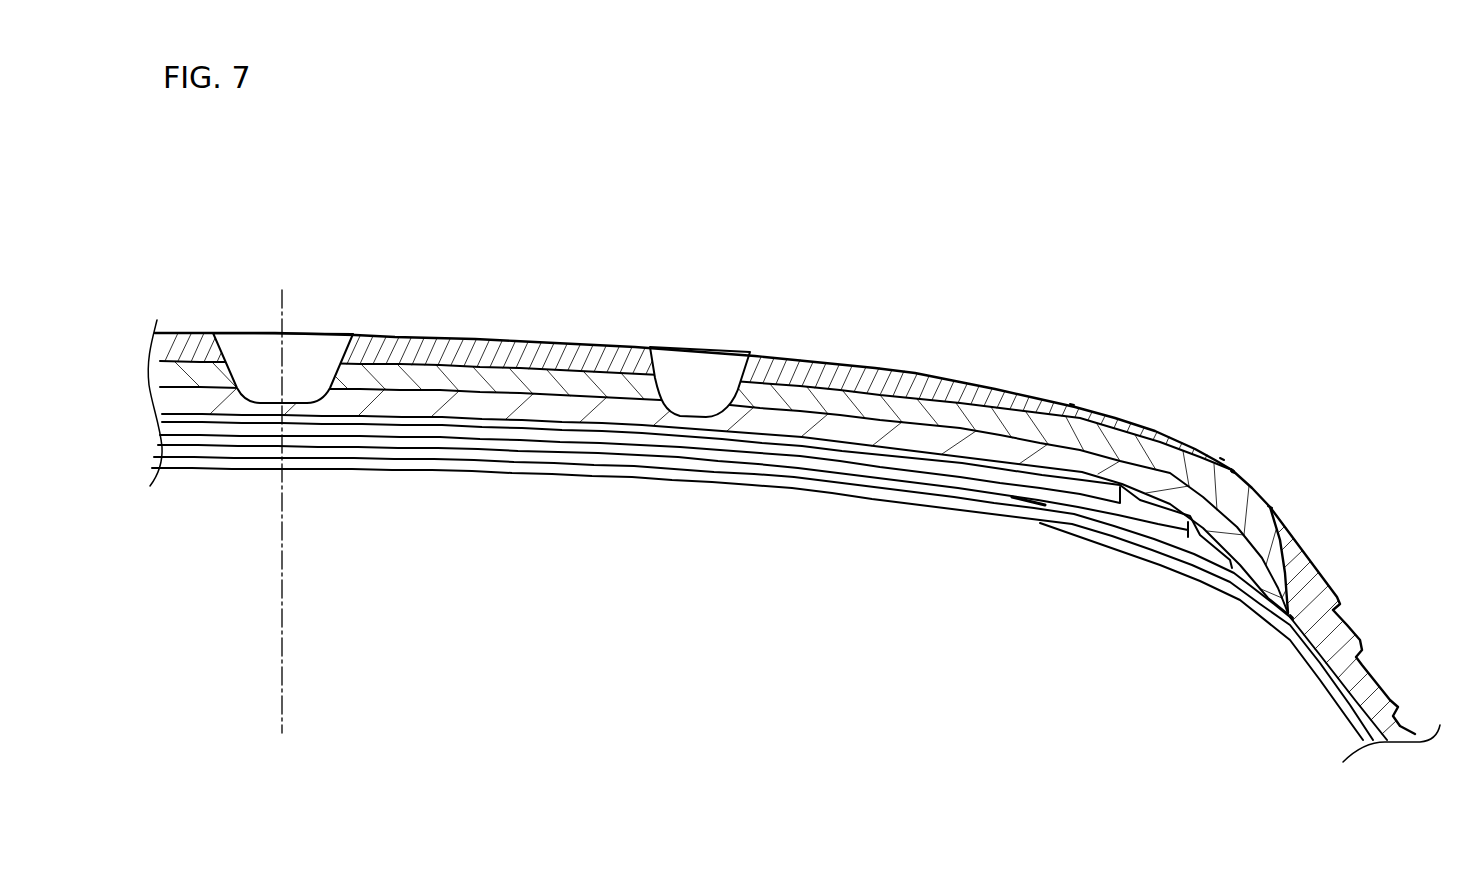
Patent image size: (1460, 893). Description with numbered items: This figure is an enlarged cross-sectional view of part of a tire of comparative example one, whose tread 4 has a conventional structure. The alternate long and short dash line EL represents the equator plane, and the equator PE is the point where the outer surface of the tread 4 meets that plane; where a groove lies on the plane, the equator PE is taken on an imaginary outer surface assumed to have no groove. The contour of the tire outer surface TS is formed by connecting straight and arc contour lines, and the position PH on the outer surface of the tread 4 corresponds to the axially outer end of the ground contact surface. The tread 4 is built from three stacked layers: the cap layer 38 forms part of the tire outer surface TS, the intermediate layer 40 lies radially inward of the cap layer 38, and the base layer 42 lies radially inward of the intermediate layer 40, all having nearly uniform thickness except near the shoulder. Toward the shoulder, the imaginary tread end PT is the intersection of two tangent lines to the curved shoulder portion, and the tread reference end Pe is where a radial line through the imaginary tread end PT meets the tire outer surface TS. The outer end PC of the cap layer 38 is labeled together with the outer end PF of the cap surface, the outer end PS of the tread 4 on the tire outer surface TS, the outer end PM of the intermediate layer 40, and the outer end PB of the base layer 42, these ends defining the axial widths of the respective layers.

The tread 4 is at (843, 341).
The cap layer 38 is at (157, 348).
The intermediate layer 40 is at (160, 374).
The base layer 42 is at (157, 397).
The tire outer surface TS is at (568, 340).
The equator PE is at (282, 333).
The equator plane EL is at (284, 670).
The position on the outer surface of the tread PH is at (1072, 403).
The imaginary tread end PT is at (1222, 458).
The tread reference end Pe is at (1233, 470).
The outer end of the cap layer PC is at (1233, 470).
The outer end of the cap surface PF is at (1302, 449).
The outer end of the tread PS is at (1273, 507).
The outer end of the intermediate layer PM is at (1292, 616).
The outer end of the base layer PB is at (1292, 618).